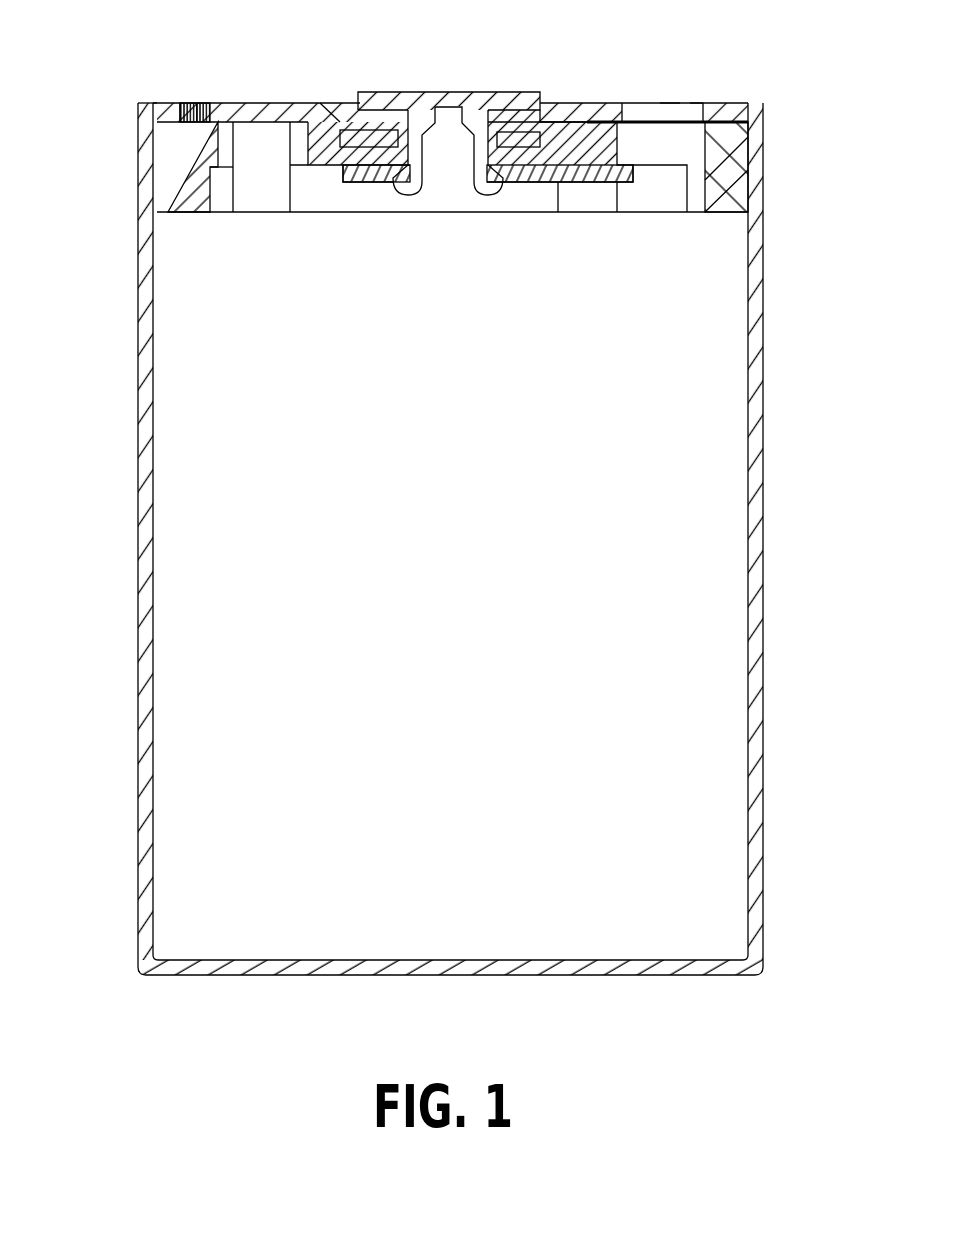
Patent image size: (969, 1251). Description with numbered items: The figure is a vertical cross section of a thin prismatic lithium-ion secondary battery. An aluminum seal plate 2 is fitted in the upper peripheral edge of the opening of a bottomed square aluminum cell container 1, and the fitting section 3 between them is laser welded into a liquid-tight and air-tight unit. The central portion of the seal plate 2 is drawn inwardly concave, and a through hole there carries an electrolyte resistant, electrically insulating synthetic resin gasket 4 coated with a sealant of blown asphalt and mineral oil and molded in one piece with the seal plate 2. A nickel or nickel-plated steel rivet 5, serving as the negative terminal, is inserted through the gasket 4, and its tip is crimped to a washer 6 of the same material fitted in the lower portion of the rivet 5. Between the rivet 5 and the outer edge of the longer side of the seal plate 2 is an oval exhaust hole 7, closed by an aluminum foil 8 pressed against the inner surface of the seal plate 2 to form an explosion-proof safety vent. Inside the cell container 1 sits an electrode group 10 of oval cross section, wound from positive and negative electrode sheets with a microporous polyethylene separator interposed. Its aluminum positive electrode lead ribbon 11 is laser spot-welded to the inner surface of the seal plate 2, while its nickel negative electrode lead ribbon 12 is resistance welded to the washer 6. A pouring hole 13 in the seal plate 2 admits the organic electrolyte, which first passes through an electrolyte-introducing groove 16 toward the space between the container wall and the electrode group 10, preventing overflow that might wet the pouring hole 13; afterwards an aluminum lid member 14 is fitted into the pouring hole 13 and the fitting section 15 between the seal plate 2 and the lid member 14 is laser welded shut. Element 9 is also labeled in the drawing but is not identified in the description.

The cell container 1 is at (753, 222).
The seal plate 2 is at (740, 103).
The fitting section 3 is at (152, 103).
The gasket 4 is at (344, 103).
The rivet 5 is at (475, 92).
The washer 6 is at (515, 172).
The exhaust hole 7 is at (698, 103).
The aluminum foil 8 is at (670, 103).
The insulating member 9 is at (678, 185).
The electrode group 10 is at (690, 538).
The positive electrode lead ribbon 11 is at (268, 132).
The negative electrode lead ribbon 12 is at (607, 203).
The pouring hole 13 is at (192, 103).
The lid member 14 is at (197, 103).
The fitting section 15 is at (177, 103).
The electrolyte-introducing groove 16 is at (176, 151).